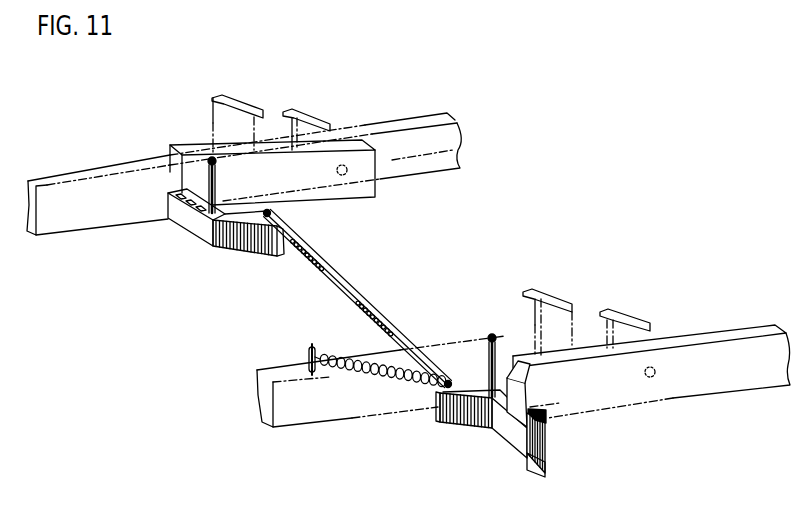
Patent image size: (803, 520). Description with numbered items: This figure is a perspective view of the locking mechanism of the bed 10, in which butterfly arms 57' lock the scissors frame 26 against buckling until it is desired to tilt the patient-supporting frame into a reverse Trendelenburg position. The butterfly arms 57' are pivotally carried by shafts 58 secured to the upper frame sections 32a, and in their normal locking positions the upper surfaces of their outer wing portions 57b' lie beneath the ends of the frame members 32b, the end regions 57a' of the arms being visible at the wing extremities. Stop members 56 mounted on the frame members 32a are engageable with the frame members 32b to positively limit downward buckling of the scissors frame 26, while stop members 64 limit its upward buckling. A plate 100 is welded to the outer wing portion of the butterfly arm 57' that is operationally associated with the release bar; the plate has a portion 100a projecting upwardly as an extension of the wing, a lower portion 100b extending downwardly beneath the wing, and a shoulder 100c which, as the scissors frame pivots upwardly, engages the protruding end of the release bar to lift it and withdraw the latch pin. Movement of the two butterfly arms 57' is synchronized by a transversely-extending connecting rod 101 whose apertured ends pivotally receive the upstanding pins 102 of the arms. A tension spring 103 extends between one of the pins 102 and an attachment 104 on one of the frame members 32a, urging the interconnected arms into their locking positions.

The bed 10 is at (429, 110).
The scissors frame 26 is at (372, 121).
The upper frame sections 32a is at (75, 176).
The frame members 32b is at (190, 146).
The stop members 56 is at (294, 110).
The butterfly arms 57' is at (342, 349).
The end tab of plate 57a' is at (347, 330).
The base bar of bracket 57b' is at (315, 337).
The shafts 58 is at (218, 181).
The stop members 64 is at (230, 100).
The plate 100 is at (548, 440).
The upwardly projecting portion 100a is at (520, 398).
The lower portion 100b is at (548, 471).
The shoulder 100c is at (548, 420).
The connecting rod 101 is at (323, 260).
The upstanding pins 102 is at (275, 213).
The tension spring 103 is at (335, 349).
The attachment 104 is at (306, 348).